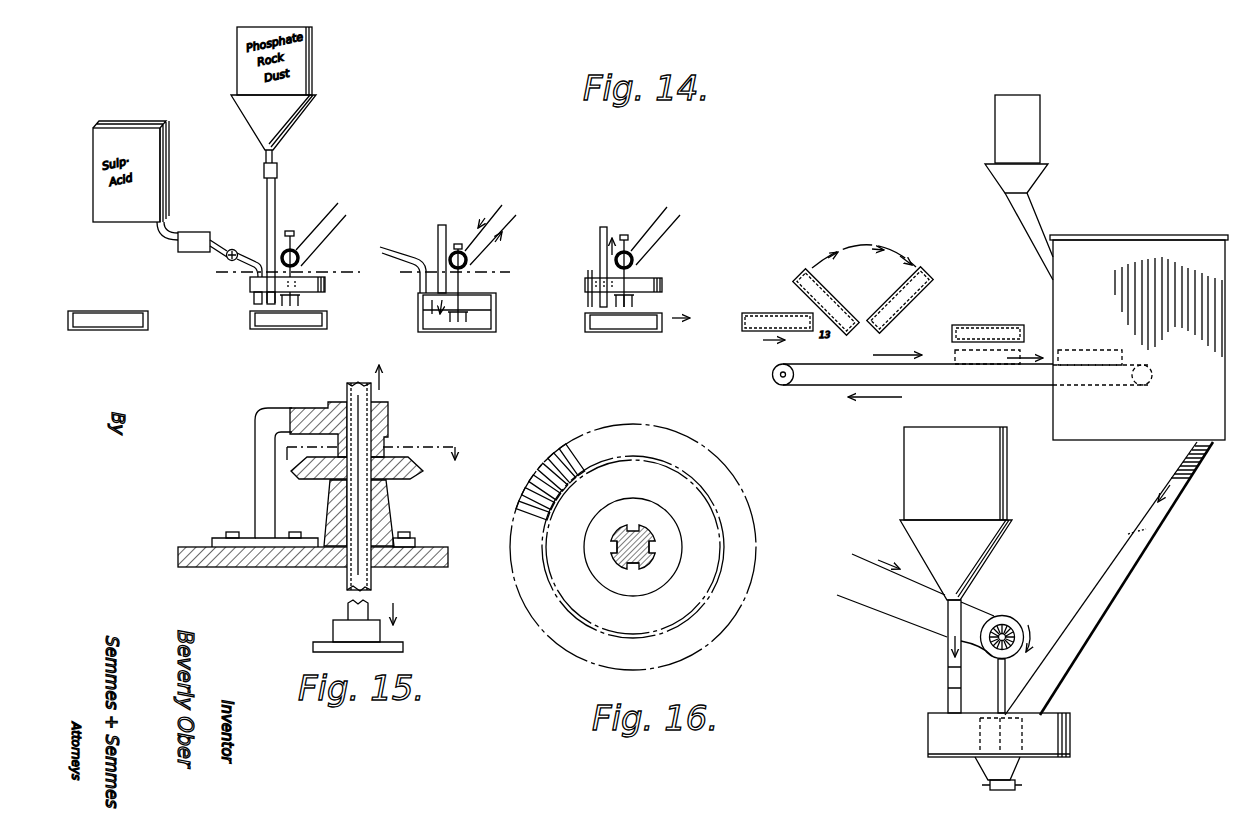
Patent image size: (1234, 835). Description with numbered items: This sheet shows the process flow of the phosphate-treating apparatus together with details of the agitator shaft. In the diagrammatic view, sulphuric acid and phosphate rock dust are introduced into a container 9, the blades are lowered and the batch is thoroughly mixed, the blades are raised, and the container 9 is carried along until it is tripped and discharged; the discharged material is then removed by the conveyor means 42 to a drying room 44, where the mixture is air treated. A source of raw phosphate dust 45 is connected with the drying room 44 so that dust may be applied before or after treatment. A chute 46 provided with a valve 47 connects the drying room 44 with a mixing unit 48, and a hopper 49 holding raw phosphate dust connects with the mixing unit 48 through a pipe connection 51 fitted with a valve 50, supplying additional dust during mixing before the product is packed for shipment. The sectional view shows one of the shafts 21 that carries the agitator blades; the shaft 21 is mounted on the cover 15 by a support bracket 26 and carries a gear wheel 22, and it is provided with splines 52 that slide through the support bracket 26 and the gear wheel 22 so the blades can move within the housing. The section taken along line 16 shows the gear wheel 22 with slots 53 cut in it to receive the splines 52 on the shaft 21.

In FIG. 14, the container 9 is at (628, 343).
In FIG. 14, the source of raw phosphate dust 45 is at (1035, 118).
In FIG. 14, the drying room 44 is at (1092, 255).
In FIG. 14, the conveyor means 42 is at (978, 388).
In FIG. 14, the hopper 49 is at (908, 472).
In FIG. 14, the valve 47 is at (1128, 535).
In FIG. 14, the chute 46 is at (1100, 580).
In FIG. 14, the valve 50 is at (946, 672).
In FIG. 14, the mixing unit 48 is at (927, 733).
In FIG. 15, the cover 15 is at (243, 563).
In FIG. 15, the support bracket 26 is at (262, 424).
In FIG. 15, the shaft 21 is at (385, 446).
In FIG. 16, the shaft 21 is at (629, 525).
In FIG. 15, the pipe connection 51 is at (392, 520).
In FIG. 16, the pipe connection 51 is at (615, 561).
In FIG. 15, the section line 16 is at (371, 464).
In FIG. 16, the gear wheel 22 is at (580, 442).
In FIG. 16, the slot 53 is at (656, 545).
In FIG. 16, the spline 52 is at (633, 571).